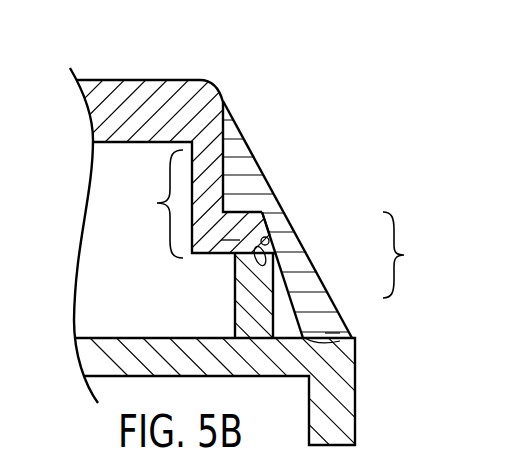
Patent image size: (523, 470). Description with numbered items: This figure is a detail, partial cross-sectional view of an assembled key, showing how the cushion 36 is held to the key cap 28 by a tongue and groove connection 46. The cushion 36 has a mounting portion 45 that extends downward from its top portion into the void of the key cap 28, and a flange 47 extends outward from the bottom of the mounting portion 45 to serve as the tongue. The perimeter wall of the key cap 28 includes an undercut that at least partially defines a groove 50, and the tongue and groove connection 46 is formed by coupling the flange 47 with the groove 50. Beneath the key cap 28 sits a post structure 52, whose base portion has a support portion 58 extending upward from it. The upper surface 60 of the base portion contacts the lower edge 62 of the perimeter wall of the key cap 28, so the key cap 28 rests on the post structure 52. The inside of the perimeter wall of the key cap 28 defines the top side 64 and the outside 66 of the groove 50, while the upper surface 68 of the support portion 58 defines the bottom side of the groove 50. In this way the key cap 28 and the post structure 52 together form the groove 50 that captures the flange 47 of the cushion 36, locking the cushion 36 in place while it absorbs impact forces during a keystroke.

The key cap 28 is at (265, 157).
The cushion 36 is at (148, 78).
The mounting portion 45 is at (152, 204).
The tongue and groove connection 46 is at (242, 200).
The flange 47 is at (230, 230).
The groove 50 is at (406, 255).
The post structure 52 is at (360, 389).
The support portion 58 is at (236, 288).
The upper surface 60 is at (334, 337).
The lower edge 62 is at (313, 340).
The top side 64 is at (244, 214).
The outside 66 is at (272, 250).
The upper surface 68 is at (252, 248).